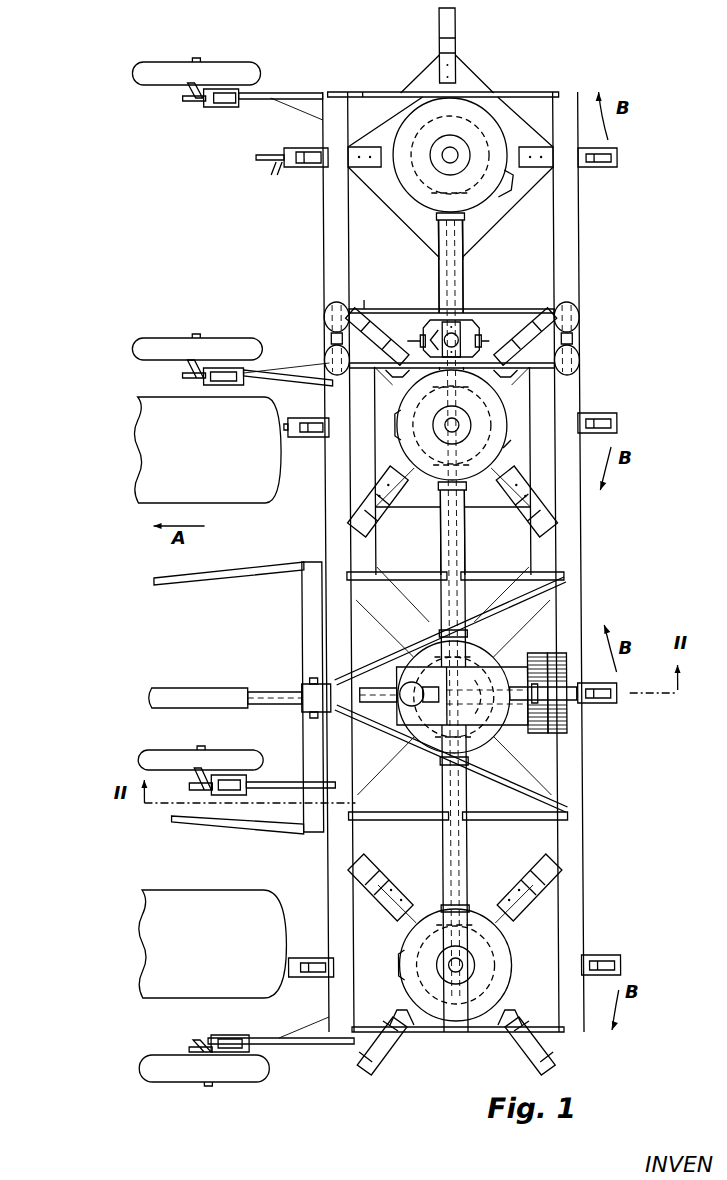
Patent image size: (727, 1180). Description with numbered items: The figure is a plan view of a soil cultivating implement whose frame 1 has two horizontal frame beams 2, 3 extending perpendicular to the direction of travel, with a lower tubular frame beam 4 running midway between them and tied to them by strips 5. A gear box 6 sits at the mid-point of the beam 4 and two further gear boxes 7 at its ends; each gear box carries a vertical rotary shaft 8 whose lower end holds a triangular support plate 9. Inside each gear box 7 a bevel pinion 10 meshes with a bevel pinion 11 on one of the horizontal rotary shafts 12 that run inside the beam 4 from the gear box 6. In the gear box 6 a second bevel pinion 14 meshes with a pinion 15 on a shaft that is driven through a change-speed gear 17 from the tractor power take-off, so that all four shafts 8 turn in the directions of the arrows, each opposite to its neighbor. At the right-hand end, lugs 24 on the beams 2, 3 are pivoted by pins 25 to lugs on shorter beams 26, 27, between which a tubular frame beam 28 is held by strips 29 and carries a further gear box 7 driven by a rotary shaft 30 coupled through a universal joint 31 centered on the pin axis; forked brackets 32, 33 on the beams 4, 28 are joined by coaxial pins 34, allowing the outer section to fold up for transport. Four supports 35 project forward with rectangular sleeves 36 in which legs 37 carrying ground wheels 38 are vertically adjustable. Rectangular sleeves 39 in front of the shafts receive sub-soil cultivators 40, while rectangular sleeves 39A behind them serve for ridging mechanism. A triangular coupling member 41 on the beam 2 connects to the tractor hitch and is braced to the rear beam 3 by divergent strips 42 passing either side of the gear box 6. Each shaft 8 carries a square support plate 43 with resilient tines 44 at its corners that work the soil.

The frame 1 is at (580, 551).
The frame beam 2 is at (410, 130).
The frame beam 3 is at (572, 582).
The tubular frame beam 4 is at (464, 548).
The strips 5 is at (375, 575).
The gear box 6 is at (406, 752).
The gear box 7 is at (494, 448).
The rotary shaft 8 is at (449, 155).
The support plate 9 is at (515, 183).
The bevel pinion 10 is at (522, 100).
The bevel pinion 11 is at (400, 218).
The rotary shaft 12 is at (437, 548).
The second bevel pinion 14 is at (522, 660).
The pinion 15 is at (520, 730).
The change-speed gear 17 is at (565, 727).
The lugs 24 is at (322, 336).
The pins 25 is at (322, 345).
The beam 26 is at (328, 238).
The beam 27 is at (570, 218).
The tubular frame beam 28 is at (461, 272).
The strips 29 is at (366, 92).
The rotary shaft 30 is at (437, 240).
The universal joint 31 is at (482, 328).
The forked bracket 32 is at (487, 341).
The forked bracket 33 is at (468, 322).
The pins 34 is at (410, 341).
The supports 35 is at (282, 92).
The rectangular sleeves 36 is at (215, 108).
The legs 37 is at (185, 96).
The ground wheels 38 is at (150, 80).
The rectangular sleeves 39 is at (305, 168).
The rectangular sleeves 39A is at (617, 158).
The sub-soil cultivator 40 is at (255, 158).
The coupling member 41 is at (304, 605).
The strips 42 is at (386, 660).
The support plate 43 is at (480, 85).
The tines 44 is at (438, 30).